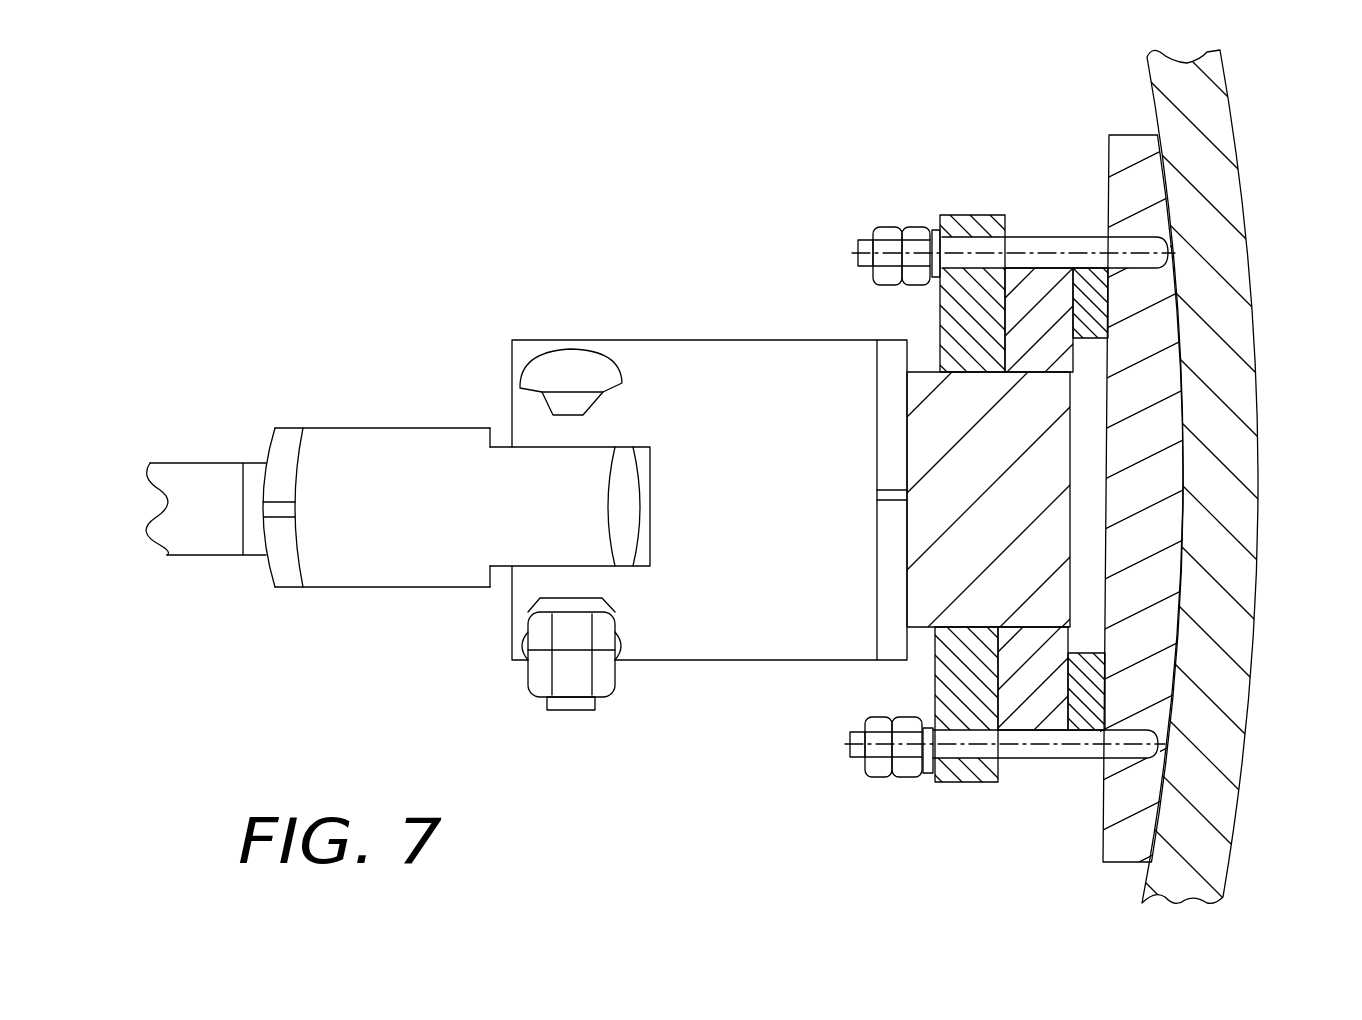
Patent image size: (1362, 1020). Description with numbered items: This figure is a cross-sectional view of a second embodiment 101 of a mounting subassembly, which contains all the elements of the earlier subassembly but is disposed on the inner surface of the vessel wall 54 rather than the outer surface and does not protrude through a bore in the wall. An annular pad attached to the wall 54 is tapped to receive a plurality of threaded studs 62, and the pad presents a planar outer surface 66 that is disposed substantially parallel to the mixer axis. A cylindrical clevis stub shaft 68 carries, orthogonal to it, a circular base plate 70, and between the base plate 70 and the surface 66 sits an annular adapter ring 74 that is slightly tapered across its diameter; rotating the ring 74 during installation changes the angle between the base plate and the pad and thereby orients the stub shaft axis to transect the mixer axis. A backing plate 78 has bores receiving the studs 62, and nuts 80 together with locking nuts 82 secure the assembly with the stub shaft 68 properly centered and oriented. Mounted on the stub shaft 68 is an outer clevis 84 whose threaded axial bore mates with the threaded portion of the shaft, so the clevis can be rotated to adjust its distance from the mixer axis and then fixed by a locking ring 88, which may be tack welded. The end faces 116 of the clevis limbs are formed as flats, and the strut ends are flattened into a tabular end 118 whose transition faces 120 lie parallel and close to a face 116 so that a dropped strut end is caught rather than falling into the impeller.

The wall 54 is at (1213, 92).
The threaded studs 62 is at (1067, 243).
The planar outer surface 66 is at (1172, 467).
The clevis stub shaft 68 is at (920, 365).
The circular base plate 70 is at (1033, 283).
The annular adapter ring 74 is at (1087, 707).
The backing plate 78 is at (950, 680).
The nuts 80 is at (917, 230).
The locking nuts 82 is at (890, 235).
The outer clevis 84 is at (655, 642).
The locking ring 88 is at (880, 590).
The second embodiment of a mounting subassembly 101 is at (817, 200).
The end faces 116 is at (512, 380).
The tabular end 118 is at (532, 515).
The faces 120 is at (502, 438).